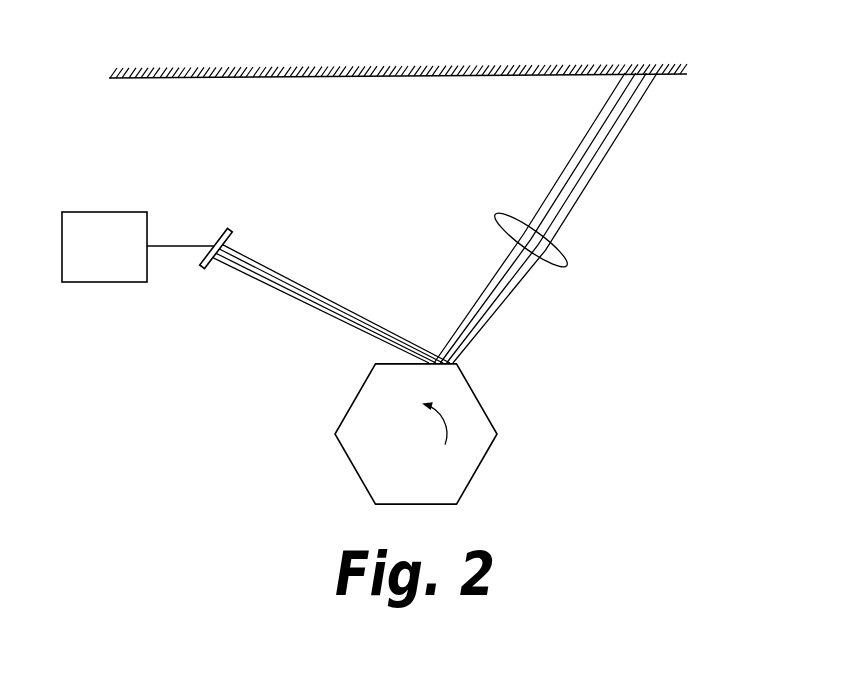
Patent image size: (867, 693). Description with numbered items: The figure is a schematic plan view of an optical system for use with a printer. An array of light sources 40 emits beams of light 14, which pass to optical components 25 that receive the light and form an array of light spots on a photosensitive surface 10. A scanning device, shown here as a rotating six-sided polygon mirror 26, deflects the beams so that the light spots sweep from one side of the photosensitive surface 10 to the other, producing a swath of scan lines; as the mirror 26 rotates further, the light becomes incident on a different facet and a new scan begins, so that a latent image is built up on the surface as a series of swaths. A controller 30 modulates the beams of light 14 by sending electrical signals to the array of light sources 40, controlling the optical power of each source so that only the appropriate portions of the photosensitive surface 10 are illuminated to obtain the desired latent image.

The photosensitive surface 10 is at (138, 78).
The beams of light 14 is at (604, 147).
The optical components 25 is at (563, 260).
The polygon mirror 26 is at (485, 407).
The controller 30 is at (93, 263).
The array of light sources 40 is at (218, 230).